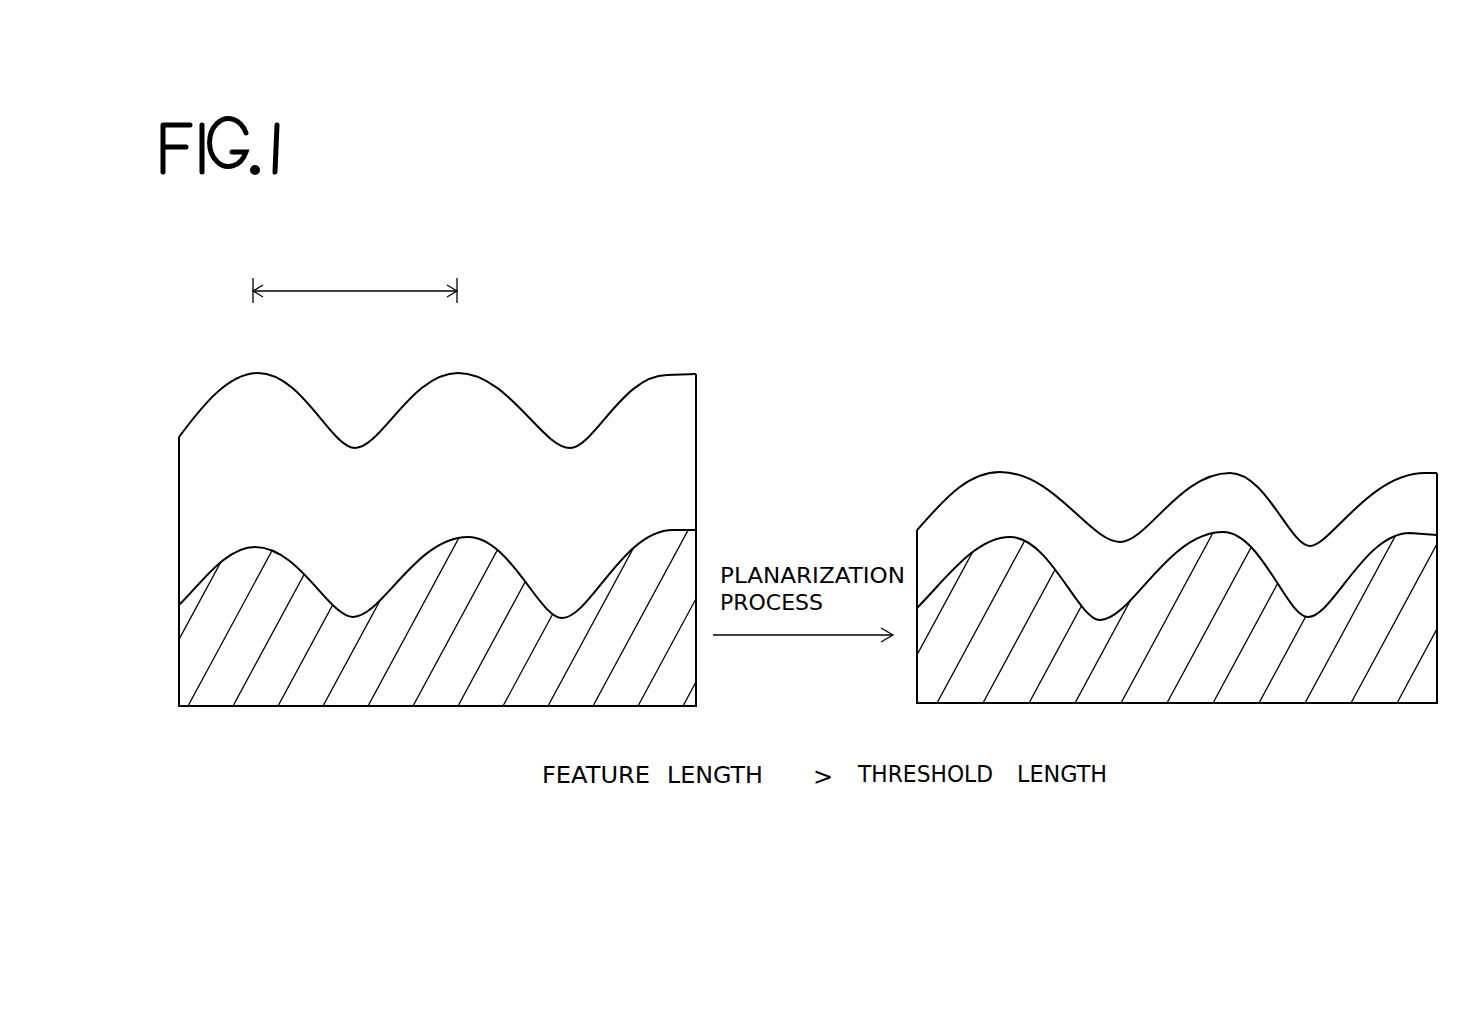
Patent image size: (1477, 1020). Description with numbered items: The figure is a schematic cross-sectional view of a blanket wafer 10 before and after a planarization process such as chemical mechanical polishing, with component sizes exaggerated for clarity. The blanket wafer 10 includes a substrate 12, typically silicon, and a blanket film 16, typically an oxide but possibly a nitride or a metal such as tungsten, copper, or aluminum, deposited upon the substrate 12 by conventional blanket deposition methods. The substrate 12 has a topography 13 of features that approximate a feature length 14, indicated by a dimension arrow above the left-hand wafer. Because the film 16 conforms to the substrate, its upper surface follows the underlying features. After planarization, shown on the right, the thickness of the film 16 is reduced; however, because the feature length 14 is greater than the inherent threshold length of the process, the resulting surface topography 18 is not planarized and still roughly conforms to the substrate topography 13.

The blanket wafer 10 is at (160, 390).
The substrate 12 is at (193, 670).
The topography 13 is at (305, 583).
The feature length 14 is at (348, 292).
The blanket film 16 is at (192, 505).
The surface topography 18 is at (300, 395).